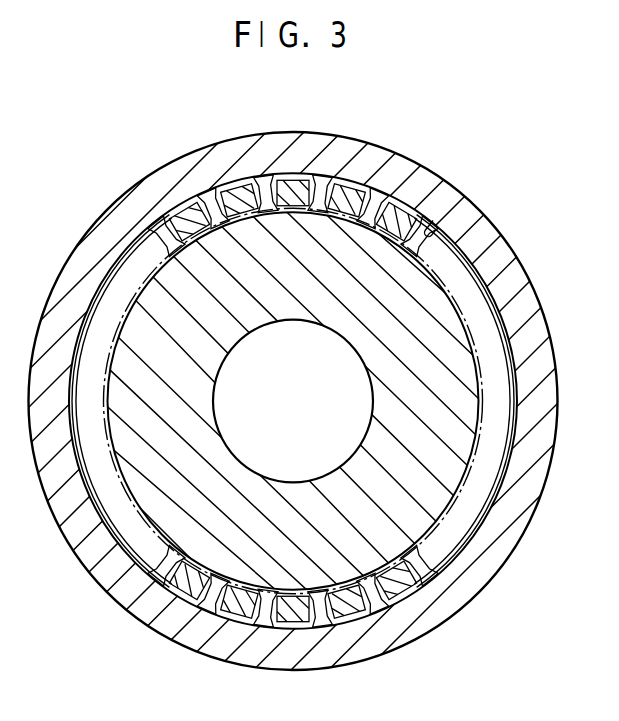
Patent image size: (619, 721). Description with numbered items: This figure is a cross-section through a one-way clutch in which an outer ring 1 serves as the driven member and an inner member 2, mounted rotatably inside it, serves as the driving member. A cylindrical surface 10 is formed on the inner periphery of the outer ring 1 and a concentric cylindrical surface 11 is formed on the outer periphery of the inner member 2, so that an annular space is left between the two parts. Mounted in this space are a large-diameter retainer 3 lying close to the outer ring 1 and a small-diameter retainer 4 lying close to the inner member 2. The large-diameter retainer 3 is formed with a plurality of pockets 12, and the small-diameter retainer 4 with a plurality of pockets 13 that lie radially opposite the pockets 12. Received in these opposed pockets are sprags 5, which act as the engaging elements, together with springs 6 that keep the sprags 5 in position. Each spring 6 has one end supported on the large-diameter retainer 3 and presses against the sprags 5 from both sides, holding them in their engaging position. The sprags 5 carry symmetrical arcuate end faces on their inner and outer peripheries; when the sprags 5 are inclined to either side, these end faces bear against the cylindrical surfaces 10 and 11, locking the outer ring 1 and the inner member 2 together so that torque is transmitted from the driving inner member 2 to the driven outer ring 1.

The outer ring 1 is at (483, 247).
The inner member 2 is at (452, 398).
The large-diameter retainer 3 is at (293, 183).
The small-diameter retainer 4 is at (222, 182).
The sprags 5 is at (318, 632).
The springs 6 is at (187, 607).
The cylindrical surface 10 is at (434, 226).
The cylindrical surface 11 is at (358, 183).
The pockets 12 is at (396, 600).
The pockets 13 is at (413, 567).